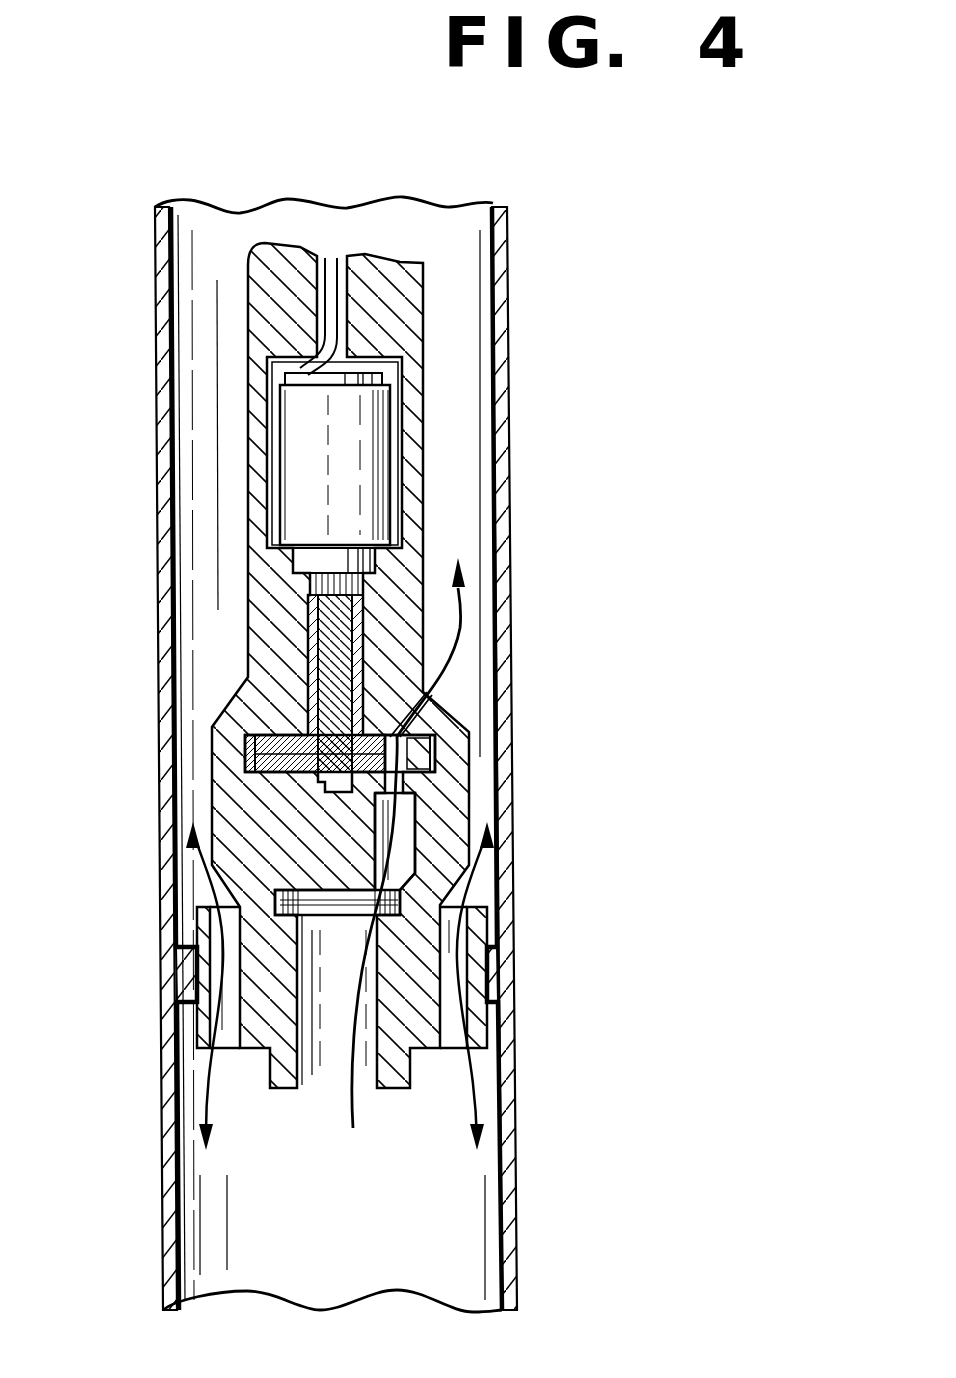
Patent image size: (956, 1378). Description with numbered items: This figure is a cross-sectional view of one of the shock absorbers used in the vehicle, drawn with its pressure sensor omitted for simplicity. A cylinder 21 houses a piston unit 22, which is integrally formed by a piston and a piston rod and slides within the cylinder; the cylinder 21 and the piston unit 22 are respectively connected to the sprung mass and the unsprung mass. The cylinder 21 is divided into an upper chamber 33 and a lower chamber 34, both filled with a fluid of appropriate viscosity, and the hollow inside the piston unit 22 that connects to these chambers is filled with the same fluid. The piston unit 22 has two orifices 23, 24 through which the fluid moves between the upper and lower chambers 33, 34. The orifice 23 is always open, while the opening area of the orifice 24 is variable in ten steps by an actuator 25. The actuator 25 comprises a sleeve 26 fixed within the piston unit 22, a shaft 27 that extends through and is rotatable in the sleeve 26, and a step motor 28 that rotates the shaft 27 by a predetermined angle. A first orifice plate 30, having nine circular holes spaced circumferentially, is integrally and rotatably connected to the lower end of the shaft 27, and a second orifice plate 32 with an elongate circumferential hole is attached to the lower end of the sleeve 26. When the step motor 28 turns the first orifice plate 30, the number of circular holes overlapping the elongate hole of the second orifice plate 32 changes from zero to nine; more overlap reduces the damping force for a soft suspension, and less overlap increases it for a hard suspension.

The cylinder 21 is at (512, 538).
The piston unit 22 is at (247, 548).
The orifice 23 is at (463, 981).
The orifice 24 is at (410, 823).
The actuator 25 is at (395, 628).
The sleeve 26 is at (315, 641).
The shaft 27 is at (332, 687).
The step motor 28 is at (287, 452).
The first orifice plate 30 is at (268, 757).
The second orifice plate 32 is at (413, 730).
The upper chamber 33 is at (466, 439).
The lower chamber 34 is at (343, 1238).